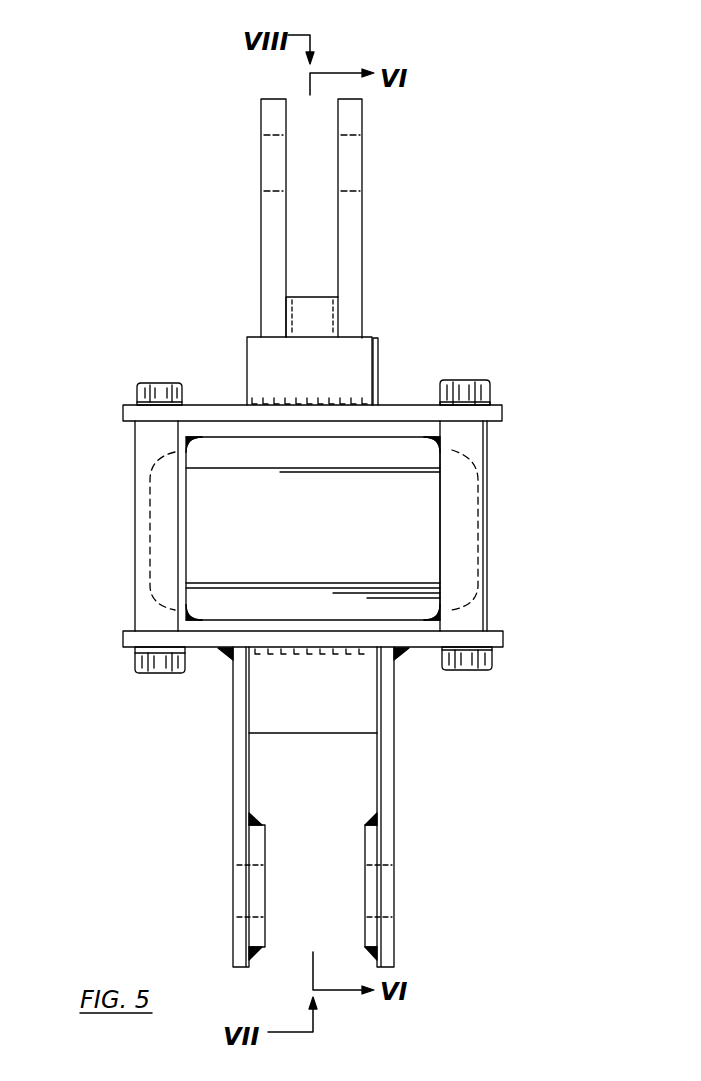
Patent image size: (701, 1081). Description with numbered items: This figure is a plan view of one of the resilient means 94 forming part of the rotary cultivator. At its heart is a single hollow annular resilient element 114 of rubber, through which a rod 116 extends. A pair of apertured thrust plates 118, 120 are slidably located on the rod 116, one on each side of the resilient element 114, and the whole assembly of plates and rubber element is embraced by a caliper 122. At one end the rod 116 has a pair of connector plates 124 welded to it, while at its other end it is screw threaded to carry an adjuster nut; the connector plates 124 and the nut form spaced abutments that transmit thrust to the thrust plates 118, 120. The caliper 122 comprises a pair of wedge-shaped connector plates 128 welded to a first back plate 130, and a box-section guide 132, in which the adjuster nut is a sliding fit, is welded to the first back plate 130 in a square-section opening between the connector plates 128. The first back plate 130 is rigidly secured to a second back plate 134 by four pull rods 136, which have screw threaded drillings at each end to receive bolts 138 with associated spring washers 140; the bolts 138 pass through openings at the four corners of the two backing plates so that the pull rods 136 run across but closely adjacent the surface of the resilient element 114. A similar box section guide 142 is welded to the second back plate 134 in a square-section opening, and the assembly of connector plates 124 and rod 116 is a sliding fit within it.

The resilient means 94 is at (158, 705).
The resilient element 114 is at (427, 483).
The rod 116 is at (318, 297).
The thrust plate 118 is at (395, 427).
The thrust plate 120 is at (423, 623).
The caliper 122 is at (402, 688).
The connector plates 124 is at (283, 230).
The connector plates 128 is at (237, 803).
The first back plate 130 is at (502, 632).
The box-section guide 132 is at (258, 708).
The second back plate 134 is at (499, 412).
The pull rods 136 is at (137, 487).
The bolts 138 is at (155, 385).
The spring washers 140 is at (128, 405).
The box section guide 142 is at (380, 350).